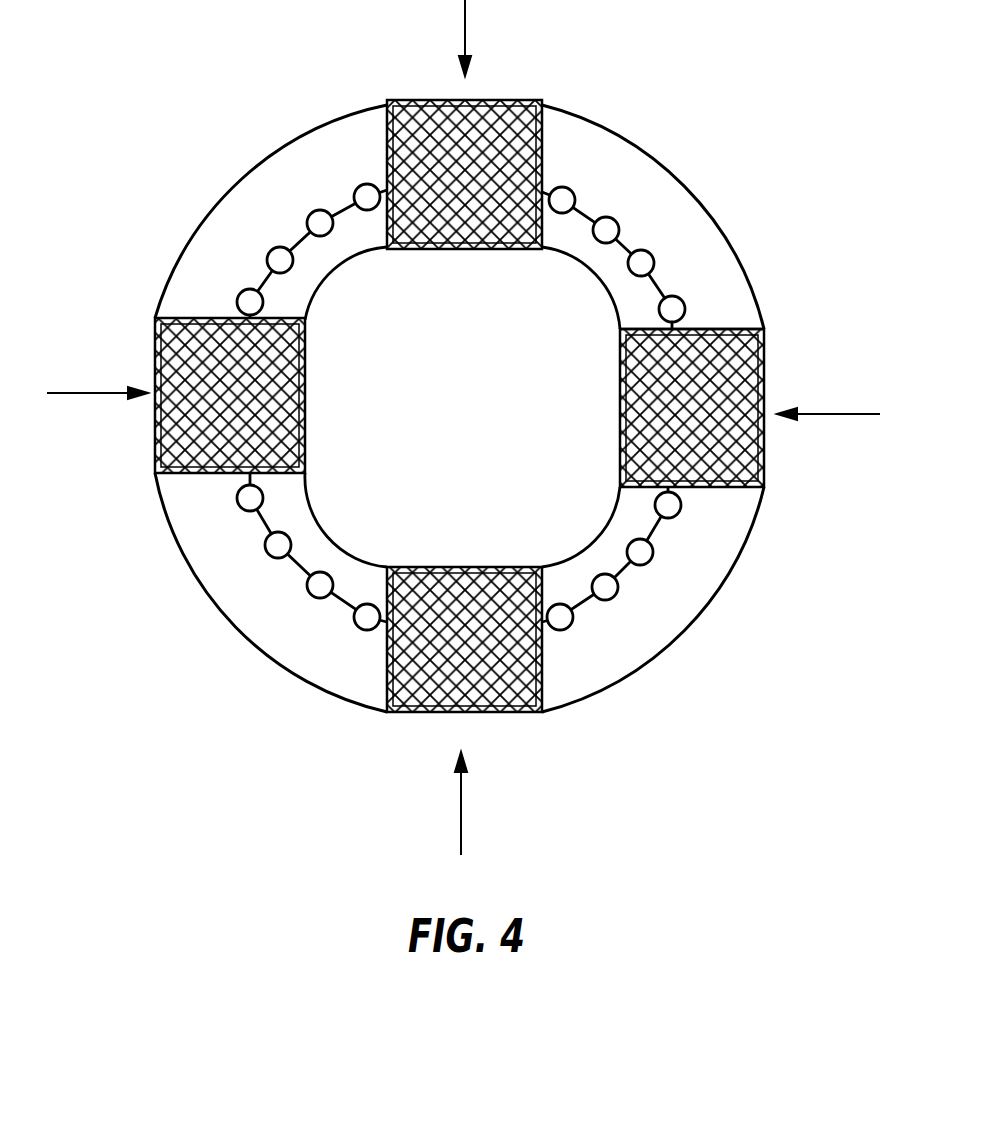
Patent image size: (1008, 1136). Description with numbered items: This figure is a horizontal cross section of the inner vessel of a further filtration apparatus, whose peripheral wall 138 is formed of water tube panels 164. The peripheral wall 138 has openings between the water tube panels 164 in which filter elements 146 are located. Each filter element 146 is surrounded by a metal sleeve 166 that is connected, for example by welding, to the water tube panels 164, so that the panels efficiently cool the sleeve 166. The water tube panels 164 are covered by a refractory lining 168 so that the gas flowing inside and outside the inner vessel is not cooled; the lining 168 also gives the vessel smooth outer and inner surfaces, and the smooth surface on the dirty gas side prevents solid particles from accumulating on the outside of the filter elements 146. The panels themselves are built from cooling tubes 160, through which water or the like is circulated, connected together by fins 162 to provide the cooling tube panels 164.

The peripheral wall 138 is at (762, 108).
The refractory lining 168 is at (597, 152).
The water tube panels 164 is at (645, 257).
The metal sleeve 166 is at (740, 328).
The filter elements 146 is at (735, 447).
The fins 162 is at (630, 573).
The cooling tubes 160 is at (605, 588).